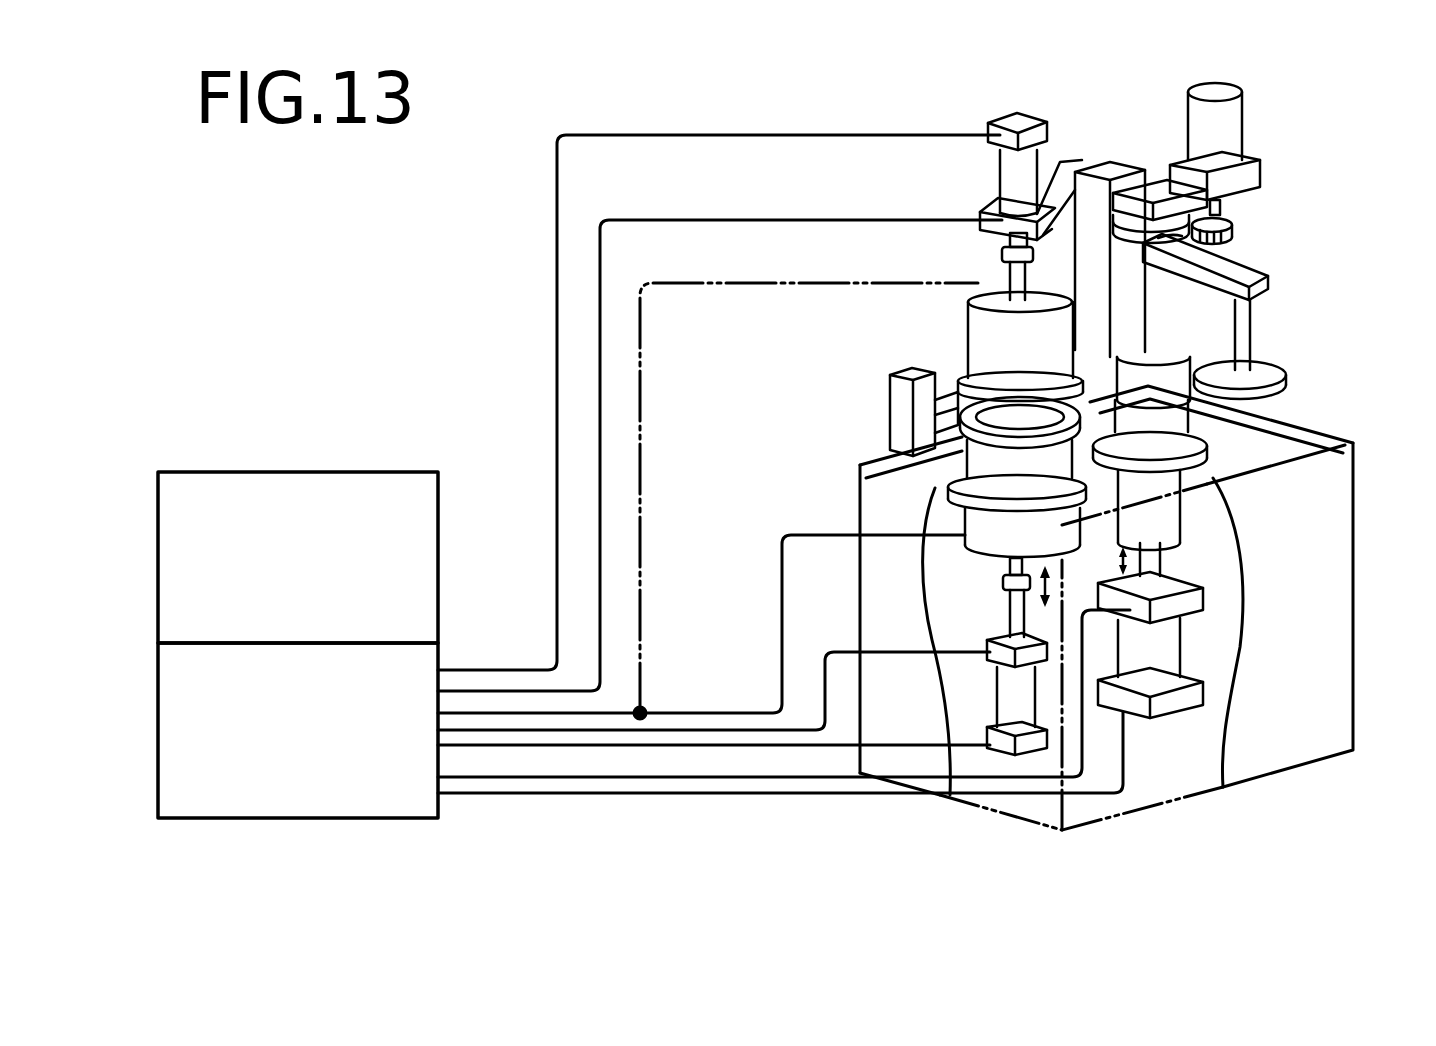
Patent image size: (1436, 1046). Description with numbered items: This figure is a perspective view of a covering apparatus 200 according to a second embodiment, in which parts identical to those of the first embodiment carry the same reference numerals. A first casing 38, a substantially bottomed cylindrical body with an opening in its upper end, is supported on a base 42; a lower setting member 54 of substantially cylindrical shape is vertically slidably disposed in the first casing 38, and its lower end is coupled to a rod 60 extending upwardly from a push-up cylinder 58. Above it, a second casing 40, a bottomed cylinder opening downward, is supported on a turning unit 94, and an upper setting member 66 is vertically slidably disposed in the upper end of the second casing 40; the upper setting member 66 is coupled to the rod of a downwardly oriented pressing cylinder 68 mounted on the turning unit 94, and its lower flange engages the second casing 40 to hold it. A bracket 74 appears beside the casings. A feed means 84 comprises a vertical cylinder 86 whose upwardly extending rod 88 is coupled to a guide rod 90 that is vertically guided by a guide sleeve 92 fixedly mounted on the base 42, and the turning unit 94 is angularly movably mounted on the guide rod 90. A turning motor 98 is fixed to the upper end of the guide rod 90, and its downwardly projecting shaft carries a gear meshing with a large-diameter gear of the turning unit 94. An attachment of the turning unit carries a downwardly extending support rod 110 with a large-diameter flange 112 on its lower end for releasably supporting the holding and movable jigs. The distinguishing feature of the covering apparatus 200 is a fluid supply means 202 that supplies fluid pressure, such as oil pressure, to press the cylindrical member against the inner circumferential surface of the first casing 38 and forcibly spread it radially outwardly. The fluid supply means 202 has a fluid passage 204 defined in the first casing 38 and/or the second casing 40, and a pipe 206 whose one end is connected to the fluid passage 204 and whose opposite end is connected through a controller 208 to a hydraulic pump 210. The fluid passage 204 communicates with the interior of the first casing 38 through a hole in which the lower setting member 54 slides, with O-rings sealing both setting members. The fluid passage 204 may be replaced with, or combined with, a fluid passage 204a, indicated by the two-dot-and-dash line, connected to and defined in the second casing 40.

The first casing 38 is at (958, 455).
The second casing 40 is at (952, 317).
The base 42 is at (1337, 557).
The lower setting member 54 is at (1016, 546).
The push-up cylinder 58 is at (1022, 722).
The rod 60 is at (1050, 745).
The upper setting member 66 is at (1003, 275).
The pressing cylinder 68 is at (1040, 157).
The support bracket 74 is at (872, 373).
The feed means 84 is at (1380, 202).
The vertical cylinder 86 is at (1170, 645).
The rod 88 is at (1160, 558).
The guide rod 90 is at (1172, 377).
The guide sleeve 92 is at (1170, 437).
The turning unit 94 is at (1200, 282).
The turning motor 98 is at (1231, 120).
The support rod 110 is at (1253, 322).
The large-diameter flange 112 is at (1273, 368).
The covering apparatus 200 is at (832, 88).
The fluid supply means 202 is at (940, 552).
The fluid passage 204 is at (982, 556).
The fluid passage 204a is at (975, 300).
The pipe 206 is at (780, 582).
The controller 208 is at (338, 820).
The hydraulic pump 210 is at (277, 472).